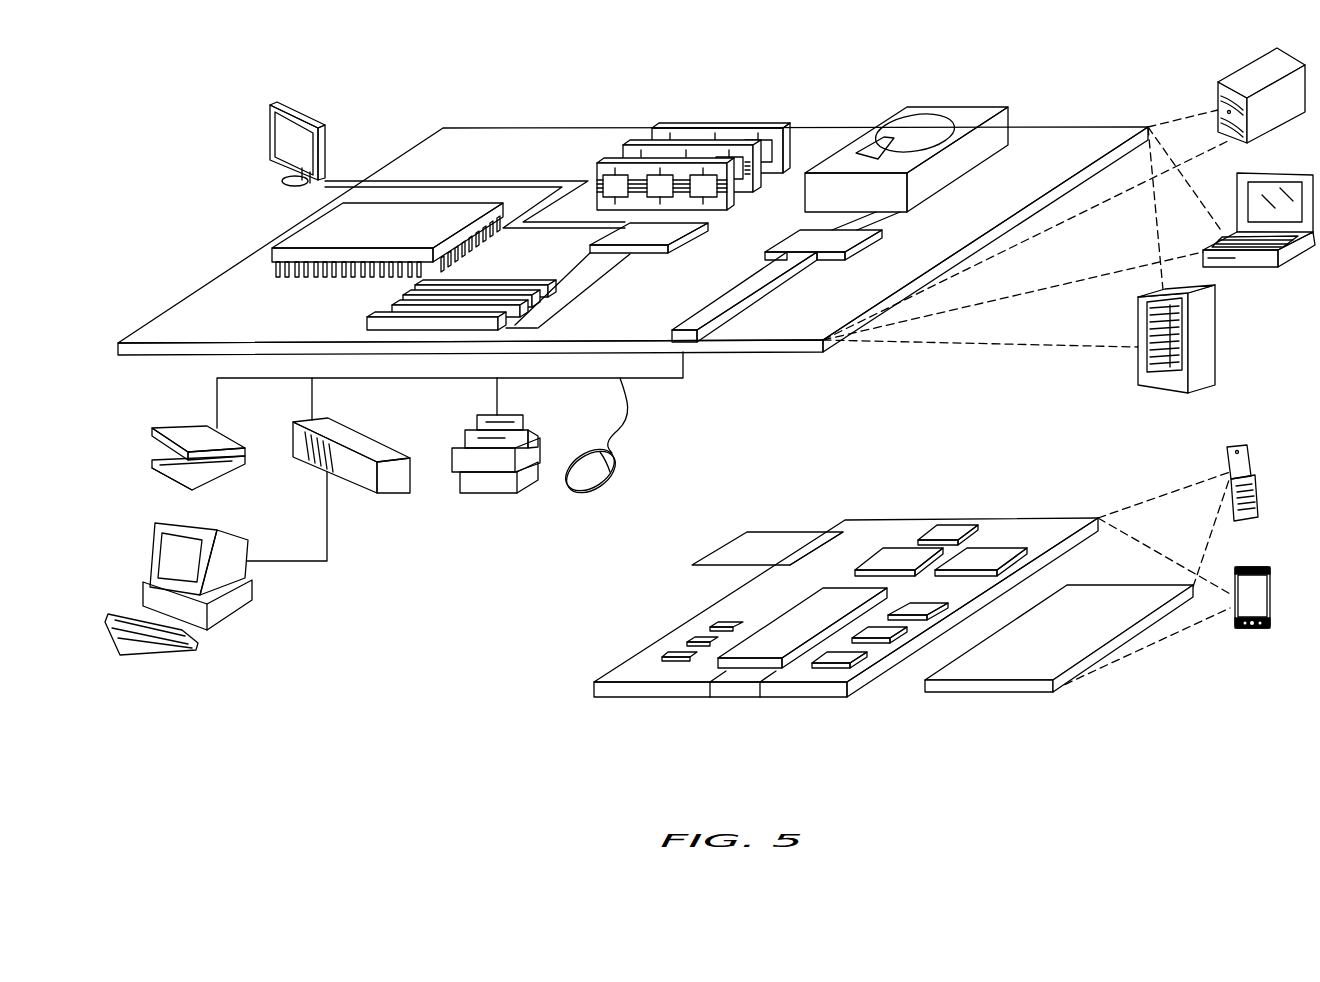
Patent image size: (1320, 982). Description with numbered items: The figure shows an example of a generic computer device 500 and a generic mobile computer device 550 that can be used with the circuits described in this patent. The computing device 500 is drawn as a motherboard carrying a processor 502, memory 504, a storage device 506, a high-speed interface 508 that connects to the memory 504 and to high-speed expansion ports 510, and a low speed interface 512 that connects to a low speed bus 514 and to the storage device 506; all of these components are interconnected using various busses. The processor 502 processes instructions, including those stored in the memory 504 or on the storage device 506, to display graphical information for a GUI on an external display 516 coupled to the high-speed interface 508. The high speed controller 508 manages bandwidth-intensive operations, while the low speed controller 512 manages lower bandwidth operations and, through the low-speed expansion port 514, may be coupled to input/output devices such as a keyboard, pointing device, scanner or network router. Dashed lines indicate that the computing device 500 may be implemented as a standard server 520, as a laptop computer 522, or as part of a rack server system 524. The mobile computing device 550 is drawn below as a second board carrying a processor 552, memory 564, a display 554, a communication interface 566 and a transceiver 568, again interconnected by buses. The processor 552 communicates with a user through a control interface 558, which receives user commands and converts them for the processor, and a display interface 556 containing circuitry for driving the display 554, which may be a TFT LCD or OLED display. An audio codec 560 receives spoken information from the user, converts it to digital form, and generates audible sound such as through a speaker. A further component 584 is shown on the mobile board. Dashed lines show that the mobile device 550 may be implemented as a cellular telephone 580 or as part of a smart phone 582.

The computing device 500 is at (392, 76).
The processor 502 is at (297, 226).
The memory 504 is at (725, 122).
The storage device 506 is at (947, 105).
The high-speed interface 508 is at (660, 233).
The high-speed expansion ports 510 is at (395, 300).
The low speed interface 512 is at (800, 233).
The low speed bus 514 is at (690, 327).
The display 516 is at (271, 100).
The standard server 520 is at (1238, 77).
The laptop computer 522 is at (1293, 172).
The rack server system 524 is at (1217, 341).
The mobile computer device 550 is at (578, 760).
The processor 552 is at (772, 630).
The display 554 is at (1097, 602).
The display interface 556 is at (855, 658).
The control interface 558 is at (882, 632).
The audio codec 560 is at (920, 600).
The memory 564 is at (692, 639).
The communication interface 566 is at (900, 548).
The transceiver 568 is at (987, 550).
The cellular telephone 580 is at (948, 528).
The smart phone 582 is at (823, 532).
The antenna module 584 is at (746, 532).